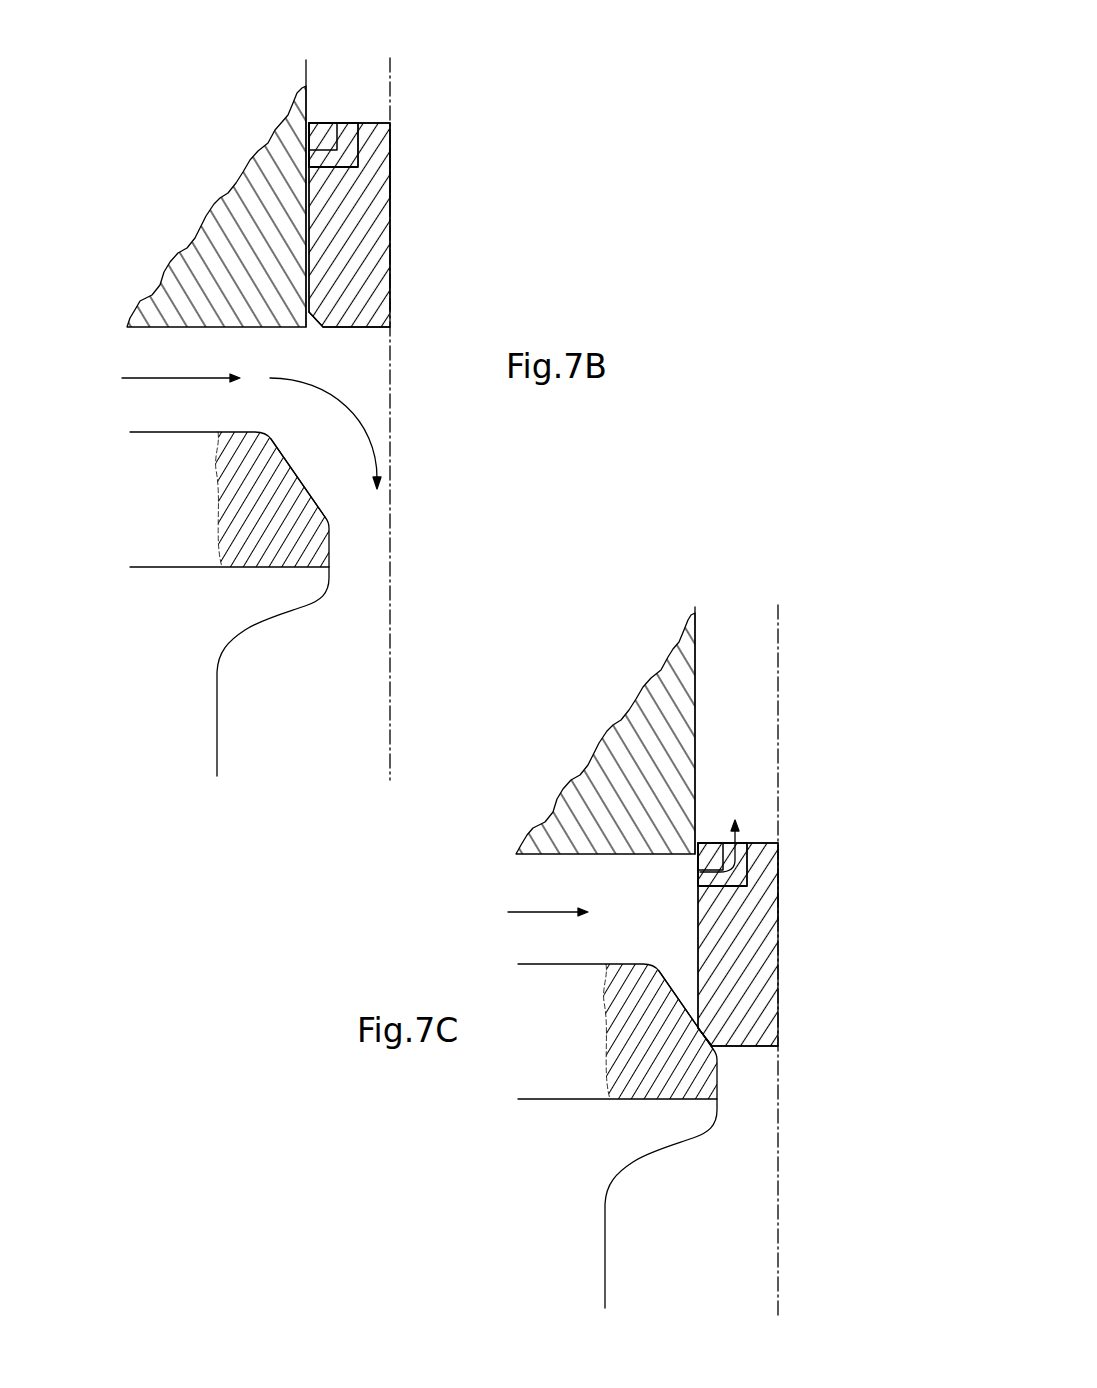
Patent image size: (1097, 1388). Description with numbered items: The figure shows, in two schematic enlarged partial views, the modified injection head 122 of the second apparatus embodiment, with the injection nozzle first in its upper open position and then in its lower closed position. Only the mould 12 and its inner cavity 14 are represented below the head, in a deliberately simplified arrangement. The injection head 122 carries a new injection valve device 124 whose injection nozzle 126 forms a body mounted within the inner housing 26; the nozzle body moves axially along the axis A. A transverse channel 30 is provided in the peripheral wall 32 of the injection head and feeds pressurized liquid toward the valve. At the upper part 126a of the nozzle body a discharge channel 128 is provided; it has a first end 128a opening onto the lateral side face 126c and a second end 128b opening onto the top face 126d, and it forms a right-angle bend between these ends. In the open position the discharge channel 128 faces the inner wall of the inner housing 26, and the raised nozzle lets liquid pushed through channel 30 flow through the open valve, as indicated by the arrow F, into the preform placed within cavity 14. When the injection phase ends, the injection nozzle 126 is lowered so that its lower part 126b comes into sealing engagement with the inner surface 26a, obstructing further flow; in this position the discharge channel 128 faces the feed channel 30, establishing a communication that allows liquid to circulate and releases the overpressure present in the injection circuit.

In FIG. 7B, the mould 12 is at (181, 672).
In FIG. 7C, the mould 12 is at (571, 1243).
In FIG. 7B, the inner cavity 14 is at (321, 720).
In FIG. 7C, the inner cavity 14 is at (713, 1276).
In FIG. 7B, the inner housing 26 is at (307, 66).
In FIG. 7C, the inner housing 26 is at (695, 641).
In FIG. 7B, the inner surface 26a is at (310, 477).
In FIG. 7C, the inner surface 26a is at (693, 976).
In FIG. 7B, the transverse channel 30 is at (196, 369).
In FIG. 7C, the transverse channel 30 is at (549, 896).
In FIG. 7B, the peripheral wall 32 is at (123, 292).
In FIG. 7C, the peripheral wall 32 is at (516, 814).
In FIG. 7B, the injection head 122 is at (150, 128).
In FIG. 7B, the injection valve device 124 is at (403, 231).
In FIG. 7B, the injection nozzle 126 is at (383, 190).
In FIG. 7C, the injection nozzle 126 is at (738, 944).
In FIG. 7B, the upper part 126a is at (383, 128).
In FIG. 7C, the upper part 126a is at (771, 850).
In FIG. 7B, the lower part 126b is at (385, 321).
In FIG. 7C, the lower part 126b is at (774, 1038).
In FIG. 7B, the side face 126c is at (307, 188).
In FIG. 7C, the side face 126c is at (697, 953).
In FIG. 7B, the top face 126d is at (380, 113).
In FIG. 7C, the top face 126d is at (768, 842).
In FIG. 7B, the discharge channel 128 is at (348, 148).
In FIG. 7C, the discharge channel 128 is at (741, 872).
In FIG. 7B, the first end 128a is at (314, 146).
In FIG. 7C, the first end 128a is at (700, 870).
In FIG. 7B, the second end 128b is at (347, 122).
In FIG. 7C, the second end 128b is at (725, 843).
In FIG. 7B, the axis A is at (390, 80).
In FIG. 7C, the axis A is at (778, 650).
In FIG. 7B, the arrow F is at (345, 407).